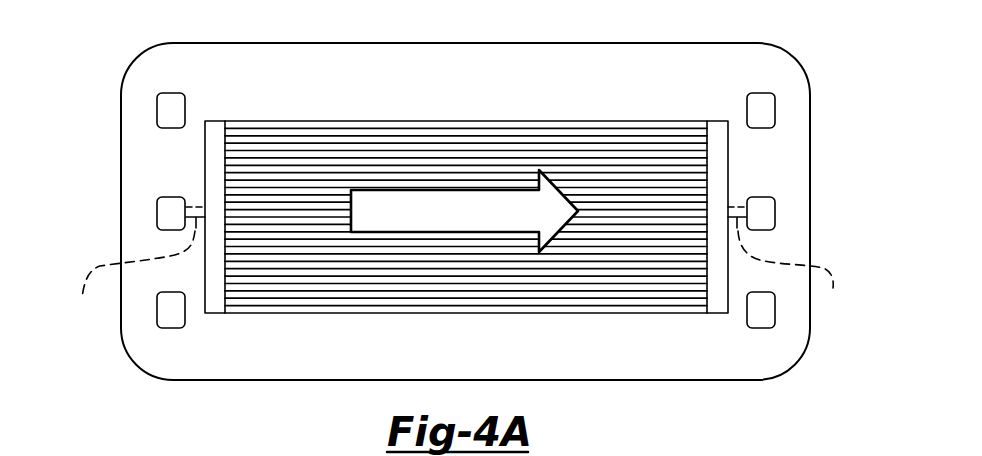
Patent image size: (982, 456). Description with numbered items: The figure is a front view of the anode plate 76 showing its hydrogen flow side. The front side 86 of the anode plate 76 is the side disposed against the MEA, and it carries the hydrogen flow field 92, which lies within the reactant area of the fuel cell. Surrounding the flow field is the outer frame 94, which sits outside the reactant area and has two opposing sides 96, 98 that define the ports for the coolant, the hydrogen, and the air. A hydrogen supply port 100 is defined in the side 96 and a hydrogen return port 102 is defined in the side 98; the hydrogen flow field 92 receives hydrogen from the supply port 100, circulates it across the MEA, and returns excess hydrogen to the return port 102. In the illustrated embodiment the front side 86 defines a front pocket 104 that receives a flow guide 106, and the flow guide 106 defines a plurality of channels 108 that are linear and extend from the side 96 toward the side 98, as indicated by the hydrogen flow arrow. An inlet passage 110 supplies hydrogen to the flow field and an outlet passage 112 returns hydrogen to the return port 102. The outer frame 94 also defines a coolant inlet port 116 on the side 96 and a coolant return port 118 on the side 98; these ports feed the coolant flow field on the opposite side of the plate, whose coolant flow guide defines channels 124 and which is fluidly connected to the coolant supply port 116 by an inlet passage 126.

The anode plate 76 is at (822, 38).
The front side 86 is at (615, 60).
The hydrogen flow field 92 is at (343, 150).
The outer frame 94 is at (794, 150).
The side 96 is at (140, 161).
The side 98 is at (795, 250).
The hydrogen supply port 100 is at (170, 212).
The hydrogen return port 102 is at (762, 213).
The front pocket 104 is at (675, 125).
The flow guide 106 is at (287, 150).
The channels 108 is at (548, 125).
The inlet passage 110 is at (135, 268).
The outlet passage 112 is at (792, 262).
The coolant inlet port 116 is at (170, 110).
The coolant return port 118 is at (770, 310).
The channels 124 is at (296, 447).
The inlet passage 126 is at (692, 443).